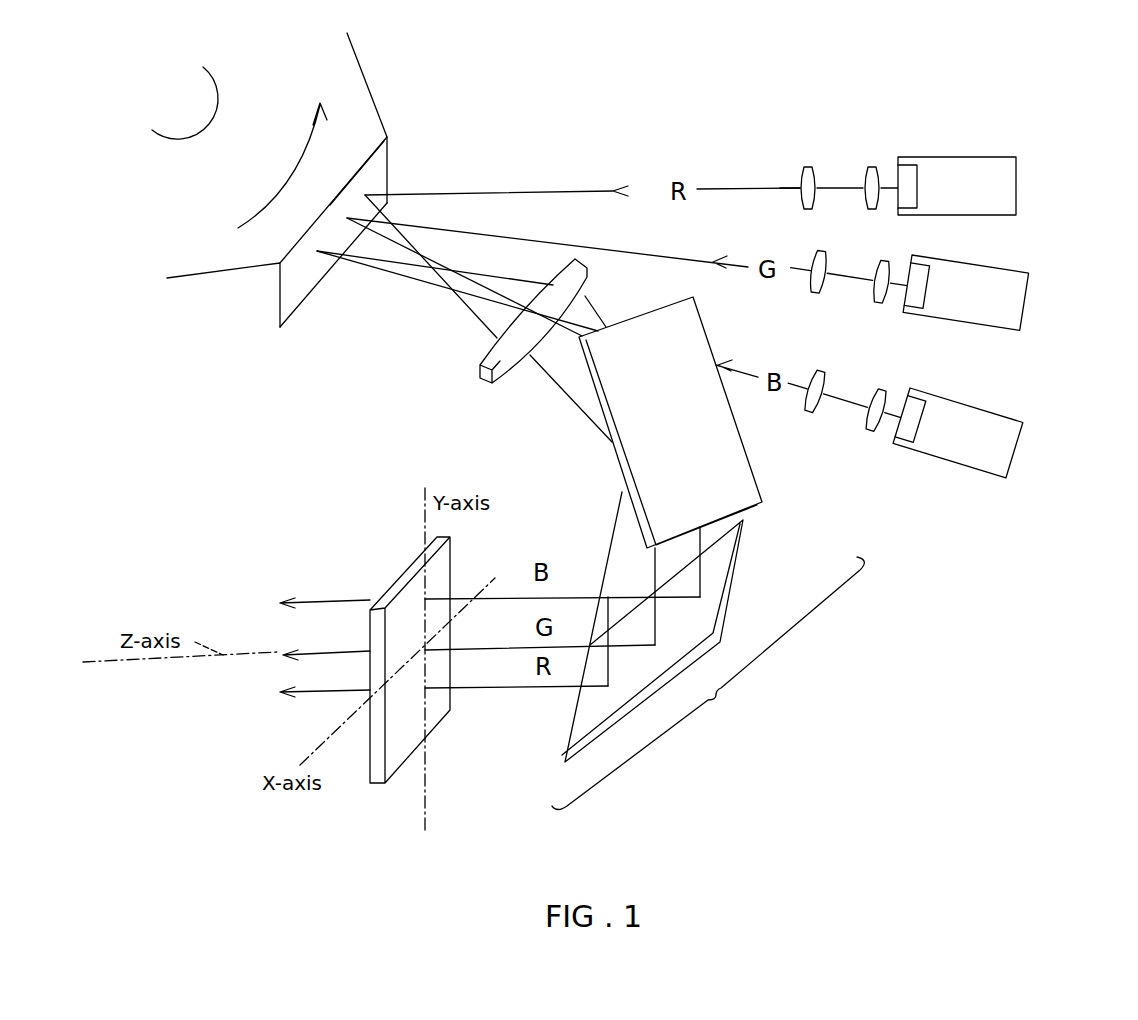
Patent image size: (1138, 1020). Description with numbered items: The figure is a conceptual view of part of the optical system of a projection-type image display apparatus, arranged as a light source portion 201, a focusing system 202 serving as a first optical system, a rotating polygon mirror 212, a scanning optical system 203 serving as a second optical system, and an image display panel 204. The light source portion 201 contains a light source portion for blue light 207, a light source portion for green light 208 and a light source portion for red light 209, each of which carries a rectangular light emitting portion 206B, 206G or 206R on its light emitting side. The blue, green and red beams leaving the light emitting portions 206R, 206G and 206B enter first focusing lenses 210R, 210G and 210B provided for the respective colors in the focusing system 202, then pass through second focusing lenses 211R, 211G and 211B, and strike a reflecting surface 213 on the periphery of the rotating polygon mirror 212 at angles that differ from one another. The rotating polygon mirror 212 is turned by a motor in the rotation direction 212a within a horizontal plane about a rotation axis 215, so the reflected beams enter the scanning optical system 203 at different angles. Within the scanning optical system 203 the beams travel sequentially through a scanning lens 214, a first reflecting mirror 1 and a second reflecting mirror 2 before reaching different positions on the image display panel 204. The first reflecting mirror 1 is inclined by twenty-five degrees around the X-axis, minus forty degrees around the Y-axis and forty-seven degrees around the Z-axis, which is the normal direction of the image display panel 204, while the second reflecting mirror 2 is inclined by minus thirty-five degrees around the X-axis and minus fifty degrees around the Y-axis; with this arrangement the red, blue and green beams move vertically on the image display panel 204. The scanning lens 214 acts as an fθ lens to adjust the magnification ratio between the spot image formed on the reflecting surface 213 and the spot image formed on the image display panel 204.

The first reflecting mirror 1 is at (737, 488).
The second reflecting mirror 2 is at (735, 579).
The light source portion 201 is at (1017, 152).
The focusing system 202 is at (888, 152).
The scanning optical system 203 is at (717, 695).
The image display panel 204 is at (407, 795).
The light emitting portion for red light 206R is at (907, 200).
The light emitting portion for green light 206G is at (910, 298).
The light emitting portion for blue light 206B is at (903, 428).
The light source portion for blue light 207 is at (993, 447).
The light source portion for green light 208 is at (1008, 297).
The light source portion for red light 209 is at (1003, 185).
The first focusing lens for red light 210R is at (872, 198).
The first focusing lens for green light 210G is at (878, 292).
The first focusing lens for blue light 210B is at (870, 422).
The second focusing lens for red light 211R is at (803, 198).
The second focusing lens for green light 211G is at (817, 287).
The second focusing lens for blue light 211B is at (808, 405).
The rotating polygon mirror 212 is at (355, 105).
The rotation direction 212a is at (320, 145).
The reflecting surface 213 is at (298, 292).
The scanning lens 214 is at (483, 377).
The rotation axis 215 is at (190, 137).